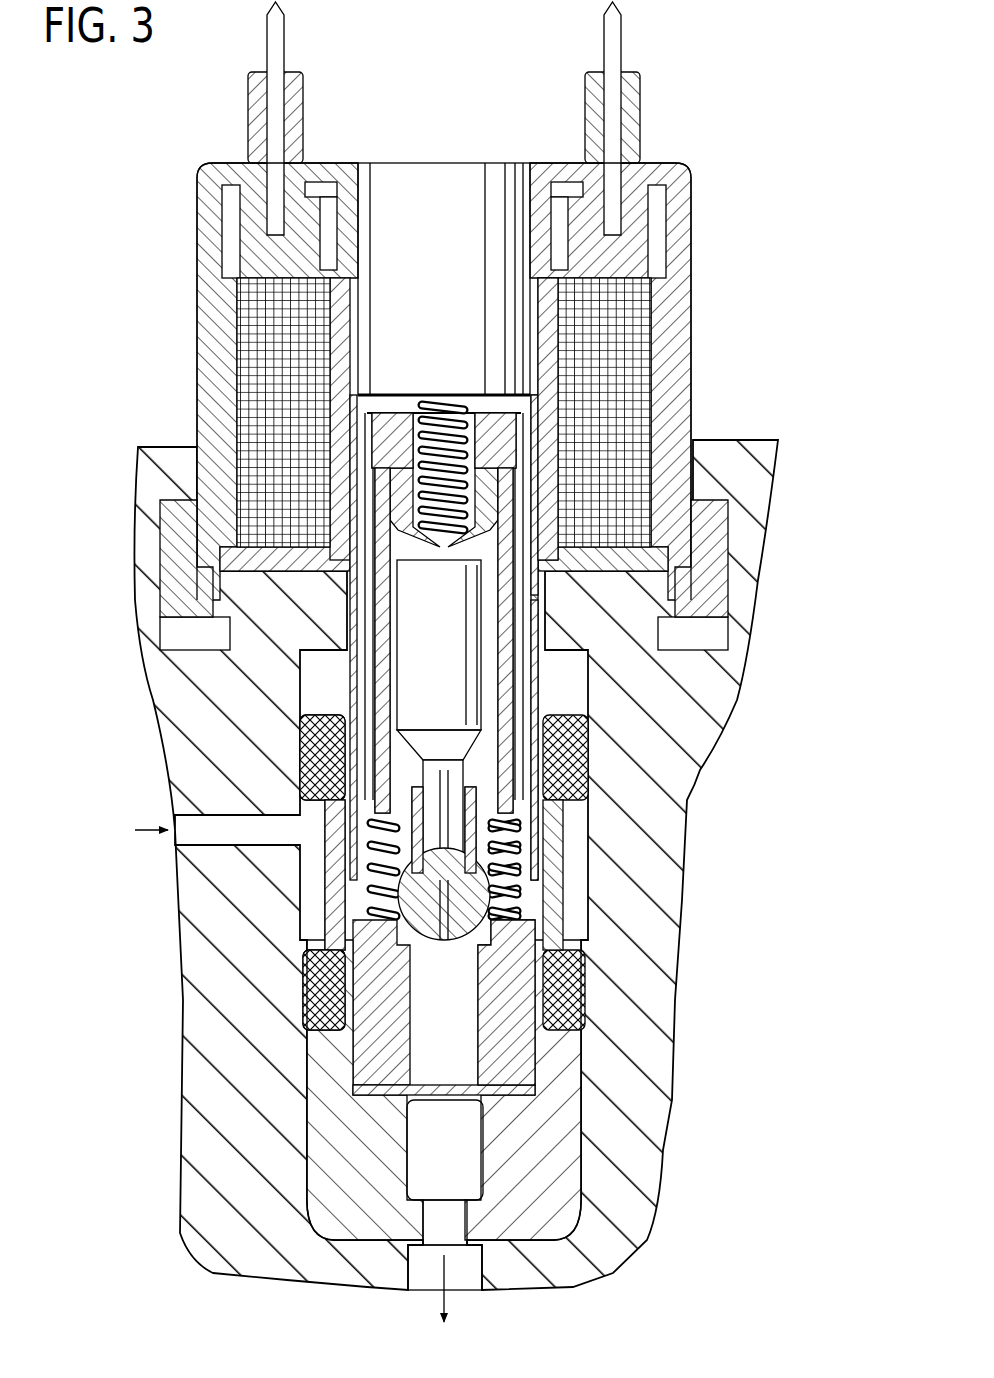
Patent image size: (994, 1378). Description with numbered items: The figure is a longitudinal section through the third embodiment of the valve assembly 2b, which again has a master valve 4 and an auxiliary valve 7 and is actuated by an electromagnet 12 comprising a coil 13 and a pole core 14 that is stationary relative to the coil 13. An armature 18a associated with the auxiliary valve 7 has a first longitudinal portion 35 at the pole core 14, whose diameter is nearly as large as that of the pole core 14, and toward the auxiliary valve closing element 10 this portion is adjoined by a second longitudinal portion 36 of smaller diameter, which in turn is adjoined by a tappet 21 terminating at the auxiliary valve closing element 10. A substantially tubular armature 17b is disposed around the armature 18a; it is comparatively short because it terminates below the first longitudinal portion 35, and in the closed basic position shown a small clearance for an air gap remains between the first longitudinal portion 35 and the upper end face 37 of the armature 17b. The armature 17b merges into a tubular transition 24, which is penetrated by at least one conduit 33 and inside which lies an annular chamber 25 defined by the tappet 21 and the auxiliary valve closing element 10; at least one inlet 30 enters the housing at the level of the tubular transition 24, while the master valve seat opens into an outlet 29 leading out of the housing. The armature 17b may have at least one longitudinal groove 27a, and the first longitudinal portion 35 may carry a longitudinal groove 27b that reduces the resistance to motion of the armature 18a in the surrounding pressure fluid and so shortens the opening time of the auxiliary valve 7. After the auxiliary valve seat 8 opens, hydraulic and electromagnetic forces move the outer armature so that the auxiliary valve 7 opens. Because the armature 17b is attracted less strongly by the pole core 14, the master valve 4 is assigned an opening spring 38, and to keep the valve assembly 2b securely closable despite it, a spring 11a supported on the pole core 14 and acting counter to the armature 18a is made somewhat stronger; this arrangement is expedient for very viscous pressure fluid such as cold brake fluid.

The valve assembly 2b is at (714, 137).
The master valve 4 is at (455, 952).
The auxiliary valve 7 is at (480, 880).
The auxiliary valve seat 8 is at (310, 960).
The auxiliary valve closing element 10 is at (330, 910).
The spring 11a is at (440, 398).
The electromagnet 12 is at (699, 231).
The coil 13 is at (270, 307).
The pole core 14 is at (438, 185).
The armature 17b is at (520, 600).
The armature 18a is at (395, 655).
The tappet 21 is at (443, 770).
The tubular transition 24 is at (500, 840).
The annular chamber 25 is at (410, 792).
The longitudinal groove 27a is at (520, 690).
The longitudinal groove 27b is at (530, 400).
The outlet 29 is at (420, 1105).
The inlet 30 is at (330, 820).
The conduit 33 is at (330, 870).
The first longitudinal portion 35 is at (390, 440).
The second longitudinal portion 36 is at (410, 605).
The upper end face 37 is at (540, 480).
The opening spring 38 is at (505, 900).